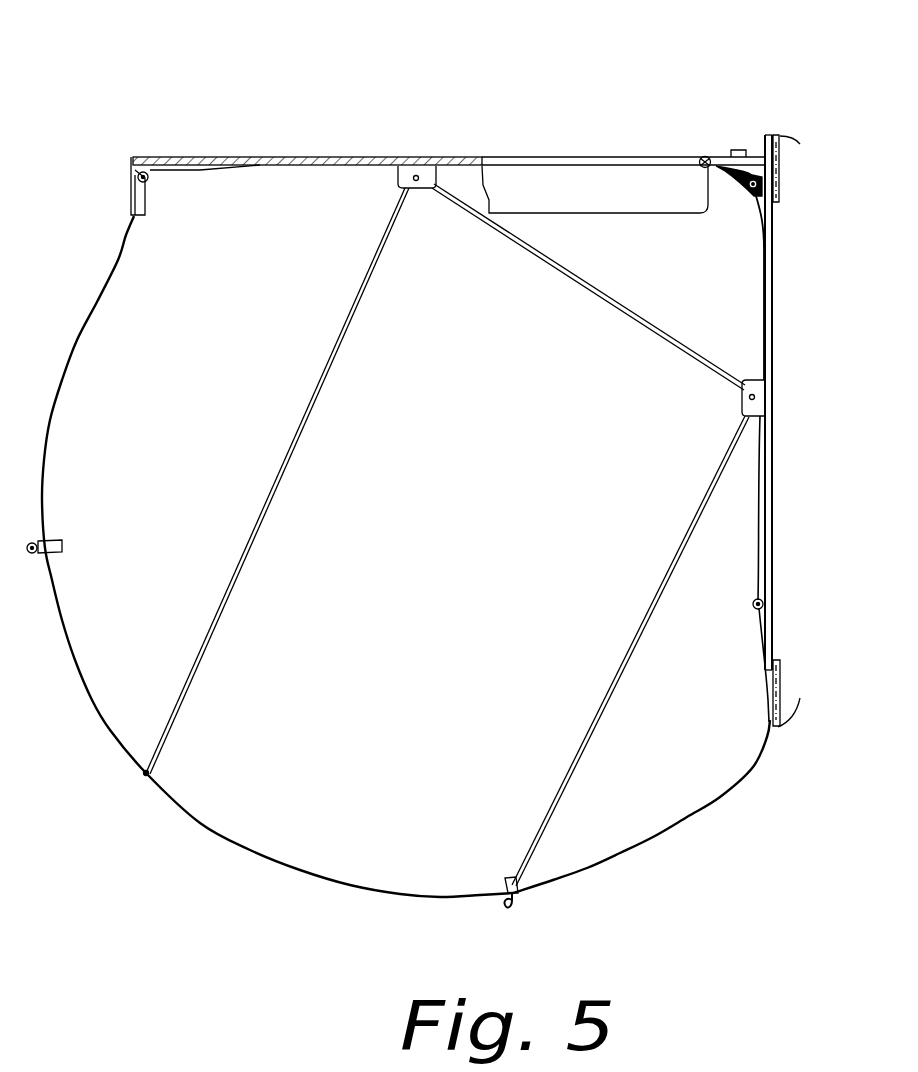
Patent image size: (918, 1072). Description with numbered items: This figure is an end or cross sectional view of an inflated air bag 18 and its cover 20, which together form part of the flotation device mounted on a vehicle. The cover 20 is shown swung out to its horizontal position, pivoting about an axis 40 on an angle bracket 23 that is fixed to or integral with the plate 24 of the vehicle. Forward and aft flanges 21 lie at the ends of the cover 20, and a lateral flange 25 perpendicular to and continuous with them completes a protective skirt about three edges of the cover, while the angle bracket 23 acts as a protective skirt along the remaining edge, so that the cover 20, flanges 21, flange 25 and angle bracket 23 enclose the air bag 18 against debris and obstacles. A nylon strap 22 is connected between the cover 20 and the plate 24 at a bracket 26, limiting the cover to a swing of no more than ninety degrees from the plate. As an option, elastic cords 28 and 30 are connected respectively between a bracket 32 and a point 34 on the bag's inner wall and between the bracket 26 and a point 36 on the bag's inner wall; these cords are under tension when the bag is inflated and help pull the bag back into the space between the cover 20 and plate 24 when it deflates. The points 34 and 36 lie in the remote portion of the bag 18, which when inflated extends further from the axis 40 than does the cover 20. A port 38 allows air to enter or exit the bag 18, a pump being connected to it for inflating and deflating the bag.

The air bag 18 is at (108, 733).
The cover 20 is at (272, 157).
The forward and aft flanges 21 is at (554, 172).
The nylon strap 22 is at (625, 306).
The angle bracket 23 is at (717, 158).
The plate 24 is at (772, 466).
The lateral flange 25 is at (130, 183).
The bracket 26 is at (762, 394).
The elastic cord 28 is at (258, 541).
The elastic cord 30 is at (614, 703).
The bracket 32 is at (408, 170).
The point 34 is at (146, 775).
The point 36 is at (520, 893).
The port 38 is at (738, 150).
The axis 40 is at (700, 158).